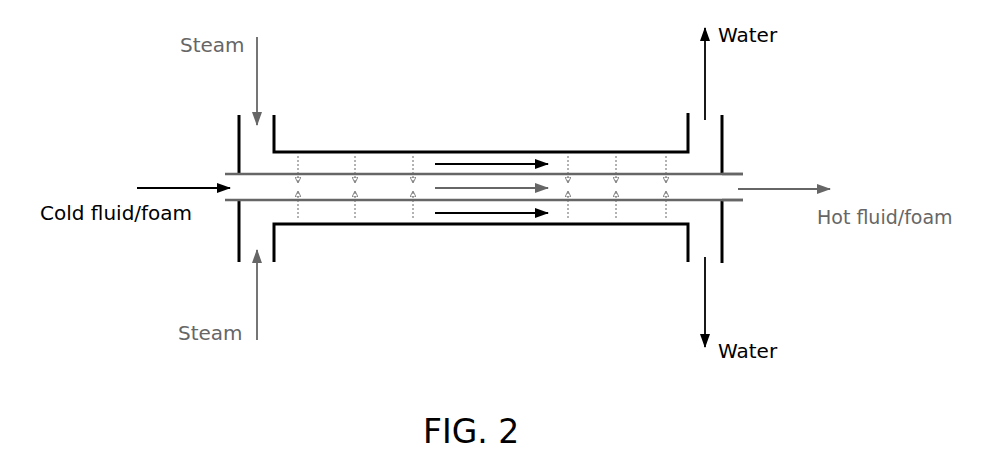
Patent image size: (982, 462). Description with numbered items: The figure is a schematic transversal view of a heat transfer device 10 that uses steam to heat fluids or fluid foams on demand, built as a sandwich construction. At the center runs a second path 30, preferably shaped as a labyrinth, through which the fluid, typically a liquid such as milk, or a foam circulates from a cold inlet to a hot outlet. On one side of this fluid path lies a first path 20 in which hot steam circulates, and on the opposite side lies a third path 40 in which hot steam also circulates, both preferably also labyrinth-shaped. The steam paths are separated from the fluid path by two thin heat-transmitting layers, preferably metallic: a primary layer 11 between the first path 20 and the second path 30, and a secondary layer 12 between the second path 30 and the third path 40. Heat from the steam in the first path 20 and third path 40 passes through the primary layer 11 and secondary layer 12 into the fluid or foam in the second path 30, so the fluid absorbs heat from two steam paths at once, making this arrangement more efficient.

The heat transfer device 10 is at (160, 120).
The primary layer 11 is at (732, 202).
The secondary layer 12 is at (730, 174).
The first path 20 is at (332, 212).
The second path 30 is at (383, 192).
The third path 40 is at (327, 160).